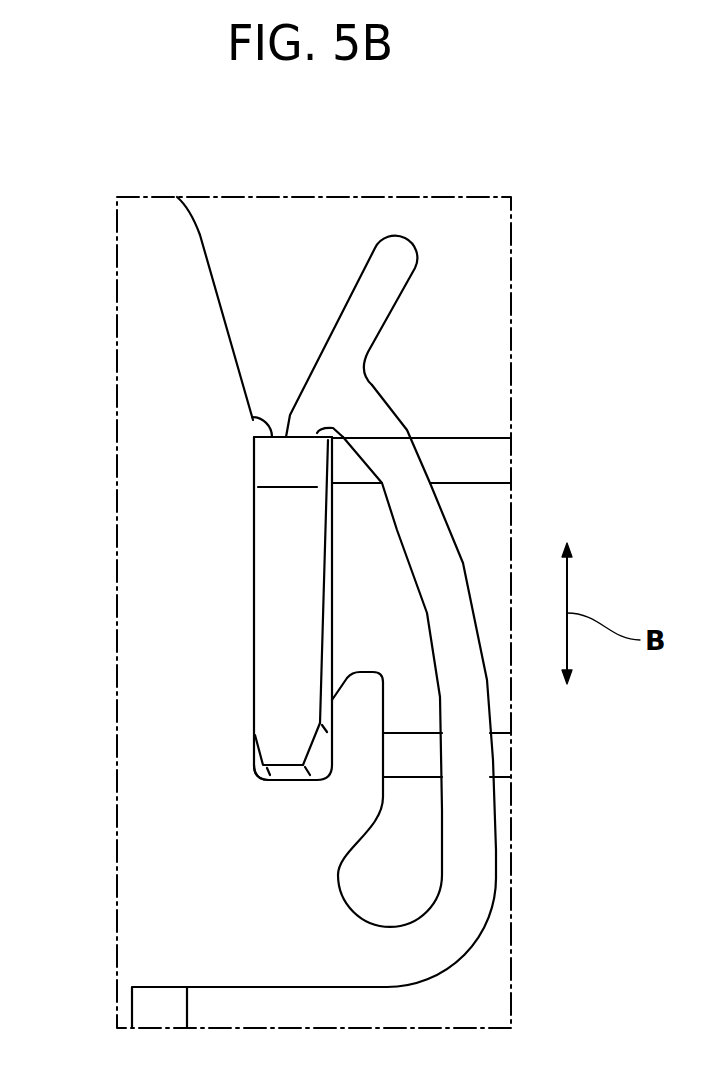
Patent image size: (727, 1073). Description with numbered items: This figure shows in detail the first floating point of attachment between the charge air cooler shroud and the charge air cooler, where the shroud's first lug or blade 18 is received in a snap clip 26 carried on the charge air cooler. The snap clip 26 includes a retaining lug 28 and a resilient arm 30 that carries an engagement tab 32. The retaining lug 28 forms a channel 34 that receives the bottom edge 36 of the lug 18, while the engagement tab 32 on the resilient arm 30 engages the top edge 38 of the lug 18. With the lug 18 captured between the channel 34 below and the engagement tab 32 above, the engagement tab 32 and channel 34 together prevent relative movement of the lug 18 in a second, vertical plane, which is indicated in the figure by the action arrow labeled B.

The first lug 18 is at (283, 600).
The snap clip 26 is at (453, 395).
The retaining lug 28 is at (363, 700).
The resilient arm 30 is at (448, 543).
The engagement tab 32 is at (298, 425).
The channel 34 is at (283, 775).
The bottom edge 36 is at (273, 780).
The top edge 38 is at (250, 418).